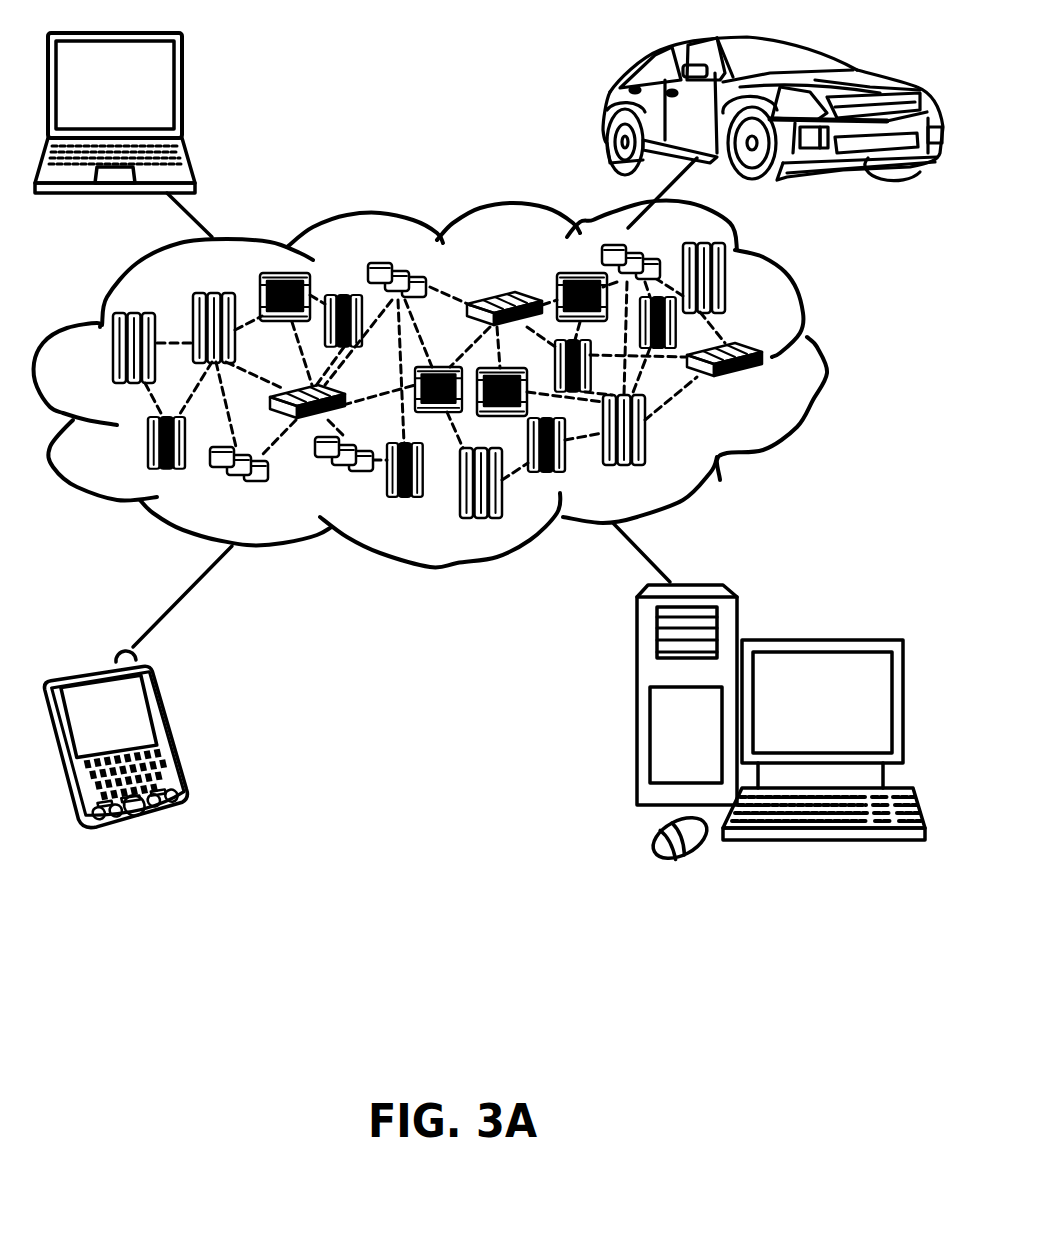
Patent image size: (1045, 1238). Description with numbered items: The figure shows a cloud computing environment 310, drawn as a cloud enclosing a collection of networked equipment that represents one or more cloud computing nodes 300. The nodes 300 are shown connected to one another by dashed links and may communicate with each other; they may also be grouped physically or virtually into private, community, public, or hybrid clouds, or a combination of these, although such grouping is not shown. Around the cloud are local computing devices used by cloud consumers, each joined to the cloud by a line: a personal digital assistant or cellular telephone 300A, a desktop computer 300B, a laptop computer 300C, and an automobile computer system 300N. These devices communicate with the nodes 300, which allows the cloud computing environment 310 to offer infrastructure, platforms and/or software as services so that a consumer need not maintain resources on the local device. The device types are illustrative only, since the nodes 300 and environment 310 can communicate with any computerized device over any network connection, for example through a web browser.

The cloud computing nodes 300 is at (774, 392).
The cloud computing environment 310 is at (820, 360).
The personal digital assistant (PDA) or cellular telephone 300A is at (172, 728).
The desktop computer 300B is at (820, 640).
The laptop computer 300C is at (182, 92).
The automobile computer system 300N is at (607, 110).